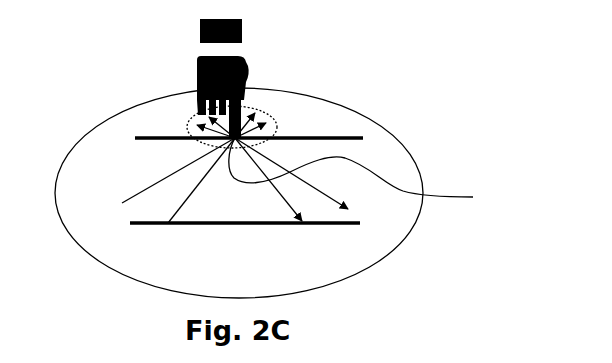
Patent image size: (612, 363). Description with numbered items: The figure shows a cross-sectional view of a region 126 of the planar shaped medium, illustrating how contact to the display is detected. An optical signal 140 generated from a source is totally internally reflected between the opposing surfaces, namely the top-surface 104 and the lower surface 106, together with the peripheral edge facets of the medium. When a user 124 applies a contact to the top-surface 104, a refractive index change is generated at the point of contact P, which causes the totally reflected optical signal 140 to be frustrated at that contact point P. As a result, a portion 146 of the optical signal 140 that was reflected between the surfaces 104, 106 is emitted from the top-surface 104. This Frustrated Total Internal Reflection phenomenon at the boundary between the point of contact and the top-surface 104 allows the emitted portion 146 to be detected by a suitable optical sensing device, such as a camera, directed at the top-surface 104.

The top-surface 104 is at (343, 138).
The opposing surface 106 is at (360, 223).
The user 124 is at (247, 67).
The region 126 is at (127, 125).
The optical signal 140 is at (209, 200).
The portion of the optical signal 146 is at (283, 121).
The point of contact P is at (359, 173).